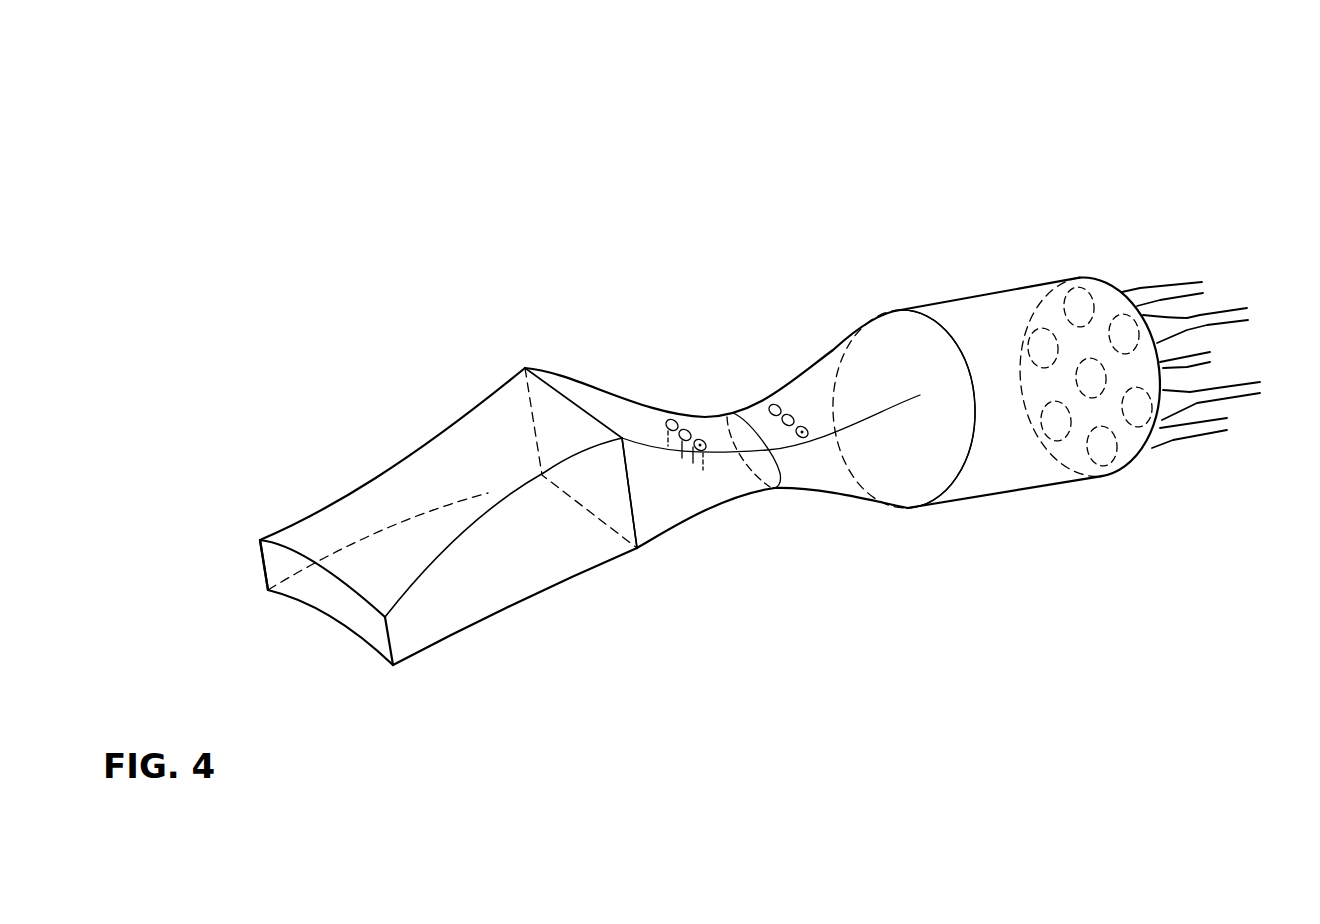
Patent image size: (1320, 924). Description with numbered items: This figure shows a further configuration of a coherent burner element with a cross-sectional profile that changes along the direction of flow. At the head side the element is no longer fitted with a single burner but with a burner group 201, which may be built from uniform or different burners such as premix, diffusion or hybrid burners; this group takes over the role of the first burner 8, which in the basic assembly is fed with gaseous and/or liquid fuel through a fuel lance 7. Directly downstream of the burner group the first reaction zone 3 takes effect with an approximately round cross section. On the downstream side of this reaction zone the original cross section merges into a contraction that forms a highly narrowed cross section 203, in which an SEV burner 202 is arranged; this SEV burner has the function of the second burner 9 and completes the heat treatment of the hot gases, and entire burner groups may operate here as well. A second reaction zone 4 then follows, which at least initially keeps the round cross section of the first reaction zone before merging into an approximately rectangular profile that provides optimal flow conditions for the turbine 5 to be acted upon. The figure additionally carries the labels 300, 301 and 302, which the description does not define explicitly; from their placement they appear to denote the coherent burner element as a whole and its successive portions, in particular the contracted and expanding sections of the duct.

The first reaction zone 3 is at (956, 409).
The second reaction zone 4 is at (608, 493).
The turbine 5 is at (293, 601).
The fuel lance 7 is at (1210, 238).
The first burner 8 is at (1213, 318).
The second burner 9 is at (700, 450).
The burner group 201 is at (1120, 332).
The SEV burner 202 is at (859, 542).
The narrowed cross section 203 is at (803, 436).
The cylindrical fiber holder 300 is at (1066, 268).
The waist transition section 301 is at (735, 416).
The tapered light guide section 302 is at (448, 420).